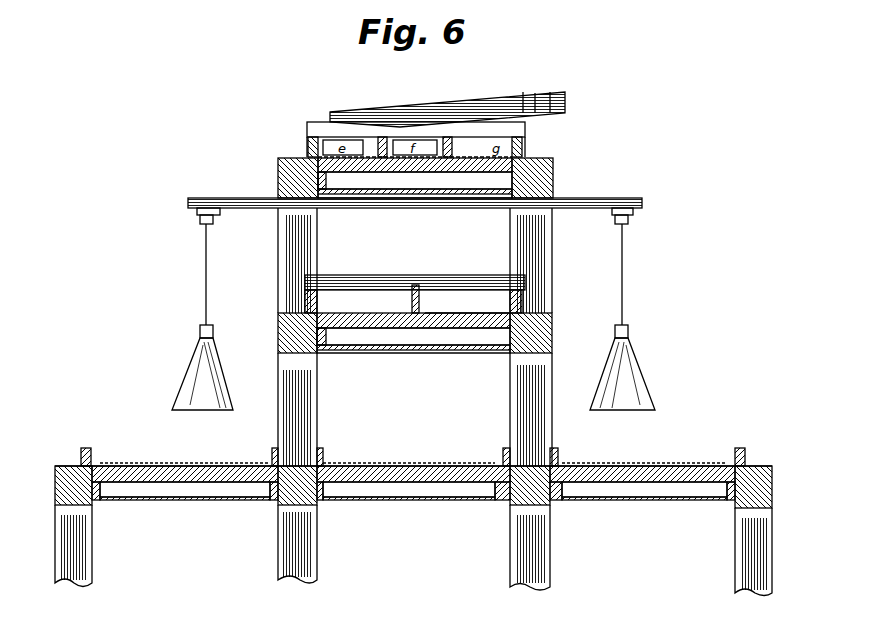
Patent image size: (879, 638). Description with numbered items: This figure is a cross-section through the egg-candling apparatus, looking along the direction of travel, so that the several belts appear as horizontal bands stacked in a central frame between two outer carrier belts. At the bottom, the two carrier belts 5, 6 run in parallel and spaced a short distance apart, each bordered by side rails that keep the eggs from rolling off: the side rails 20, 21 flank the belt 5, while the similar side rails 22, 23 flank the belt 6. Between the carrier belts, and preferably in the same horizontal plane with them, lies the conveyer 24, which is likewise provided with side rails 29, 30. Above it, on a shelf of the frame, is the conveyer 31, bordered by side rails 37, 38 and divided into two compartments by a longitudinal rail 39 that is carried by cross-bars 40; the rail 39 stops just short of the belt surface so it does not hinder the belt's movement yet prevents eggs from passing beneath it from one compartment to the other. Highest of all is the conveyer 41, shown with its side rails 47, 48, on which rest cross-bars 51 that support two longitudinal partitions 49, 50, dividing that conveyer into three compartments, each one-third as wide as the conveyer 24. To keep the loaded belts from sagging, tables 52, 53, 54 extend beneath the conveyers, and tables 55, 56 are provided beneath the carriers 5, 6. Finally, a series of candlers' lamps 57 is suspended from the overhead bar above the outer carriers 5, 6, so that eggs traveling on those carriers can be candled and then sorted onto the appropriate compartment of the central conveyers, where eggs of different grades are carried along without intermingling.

The endless belt 5 is at (186, 466).
The endless belt 6 is at (636, 466).
The side rail 20 is at (91, 455).
The side rail 21 is at (272, 457).
The side rail 22 is at (735, 455).
The side rail 23 is at (558, 457).
The conveyer 24 is at (412, 466).
The side rail 29 is at (323, 457).
The side rail 30 is at (503, 457).
The conveyer 31 is at (437, 302).
The side rail 37 is at (312, 300).
The side rail 38 is at (522, 305).
The rail 39 is at (419, 295).
The cross-bar 40 is at (380, 283).
The conveyer 41 is at (468, 157).
The side rail 47 is at (308, 147).
The side rail 48 is at (522, 147).
The longitudinal partition 49 is at (382, 138).
The longitudinal partition 50 is at (447, 138).
The cross-bar 51 is at (330, 128).
The table 52 is at (424, 484).
The table 53 is at (456, 330).
The table 54 is at (446, 172).
The table 55 is at (195, 484).
The table 56 is at (661, 484).
The candlers' lamp 57 is at (205, 362).